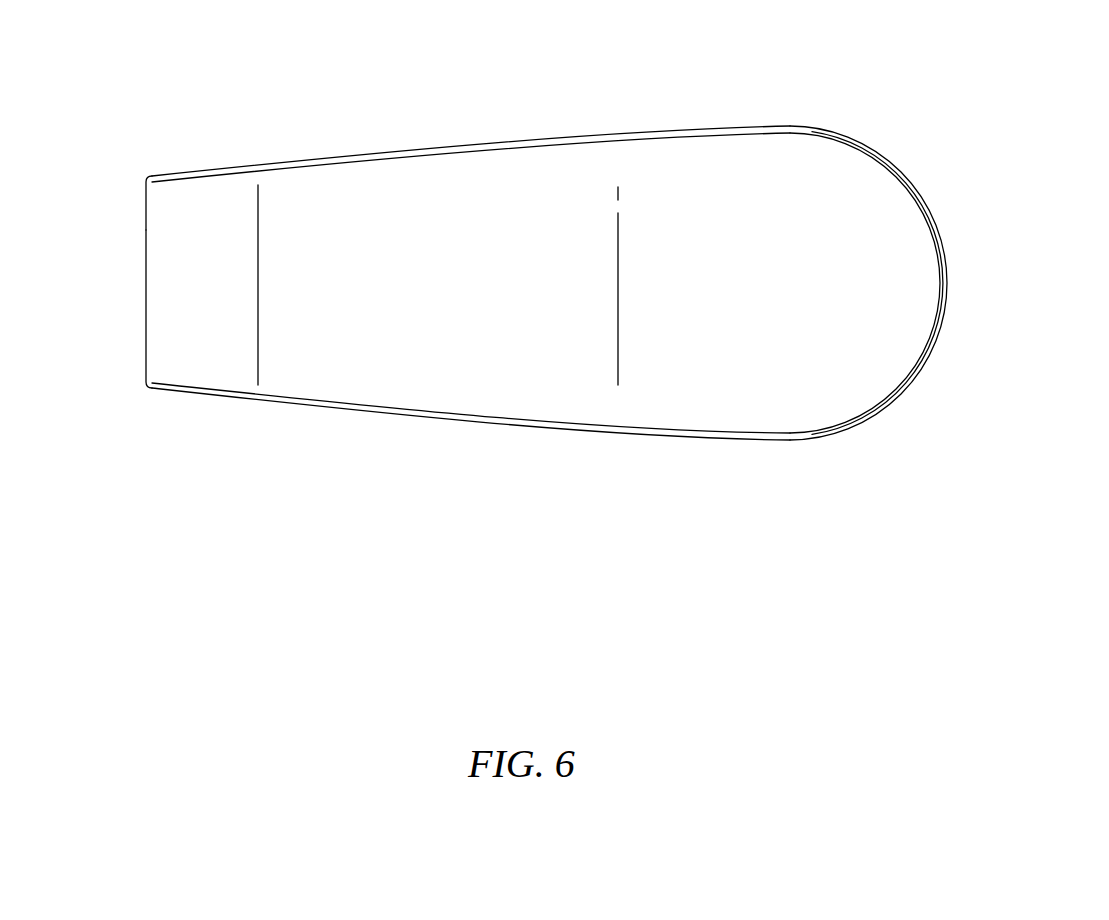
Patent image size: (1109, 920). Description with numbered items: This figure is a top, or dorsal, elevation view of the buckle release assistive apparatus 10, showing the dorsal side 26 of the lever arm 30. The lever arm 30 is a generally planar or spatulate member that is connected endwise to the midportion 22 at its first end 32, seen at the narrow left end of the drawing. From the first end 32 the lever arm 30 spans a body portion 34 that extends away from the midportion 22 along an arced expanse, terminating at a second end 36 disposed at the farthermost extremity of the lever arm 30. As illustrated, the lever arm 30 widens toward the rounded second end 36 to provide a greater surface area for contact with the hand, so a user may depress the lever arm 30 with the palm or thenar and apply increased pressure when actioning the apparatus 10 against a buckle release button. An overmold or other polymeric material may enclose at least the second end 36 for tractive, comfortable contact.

The apparatus 10 is at (918, 108).
The midportion 22 is at (145, 288).
The dorsal side 26 is at (720, 287).
The lever arm 30 is at (542, 168).
The first end 32 is at (147, 155).
The body portion 34 is at (366, 168).
The second end 36 is at (857, 358).